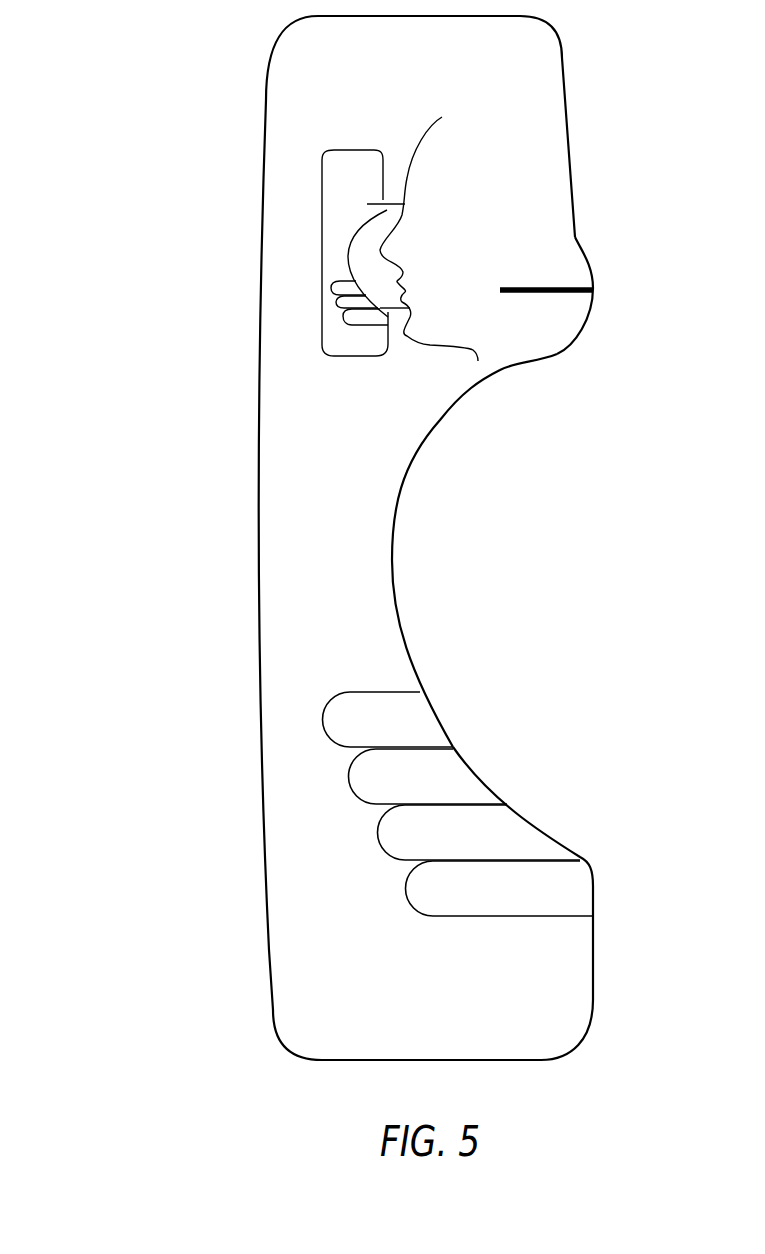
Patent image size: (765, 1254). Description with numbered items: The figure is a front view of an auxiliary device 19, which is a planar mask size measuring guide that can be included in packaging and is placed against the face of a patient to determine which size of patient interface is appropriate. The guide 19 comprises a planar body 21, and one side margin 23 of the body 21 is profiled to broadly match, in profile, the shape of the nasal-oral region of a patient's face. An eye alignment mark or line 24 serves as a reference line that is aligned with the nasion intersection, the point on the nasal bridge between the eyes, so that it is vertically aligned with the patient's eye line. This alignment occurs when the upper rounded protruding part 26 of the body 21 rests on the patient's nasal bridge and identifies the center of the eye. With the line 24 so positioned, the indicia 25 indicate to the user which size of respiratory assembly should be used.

The auxiliary device 19 is at (150, 367).
The planar body 21 is at (316, 103).
The side margin 23 is at (465, 393).
The eye alignment mark or line 24 is at (550, 288).
The indicia 25 is at (487, 769).
The upper rounded protruding part 26 is at (558, 356).